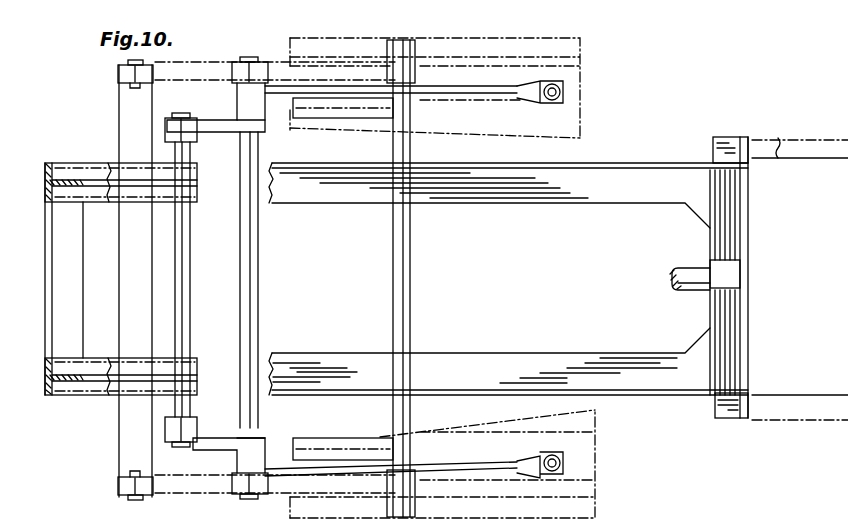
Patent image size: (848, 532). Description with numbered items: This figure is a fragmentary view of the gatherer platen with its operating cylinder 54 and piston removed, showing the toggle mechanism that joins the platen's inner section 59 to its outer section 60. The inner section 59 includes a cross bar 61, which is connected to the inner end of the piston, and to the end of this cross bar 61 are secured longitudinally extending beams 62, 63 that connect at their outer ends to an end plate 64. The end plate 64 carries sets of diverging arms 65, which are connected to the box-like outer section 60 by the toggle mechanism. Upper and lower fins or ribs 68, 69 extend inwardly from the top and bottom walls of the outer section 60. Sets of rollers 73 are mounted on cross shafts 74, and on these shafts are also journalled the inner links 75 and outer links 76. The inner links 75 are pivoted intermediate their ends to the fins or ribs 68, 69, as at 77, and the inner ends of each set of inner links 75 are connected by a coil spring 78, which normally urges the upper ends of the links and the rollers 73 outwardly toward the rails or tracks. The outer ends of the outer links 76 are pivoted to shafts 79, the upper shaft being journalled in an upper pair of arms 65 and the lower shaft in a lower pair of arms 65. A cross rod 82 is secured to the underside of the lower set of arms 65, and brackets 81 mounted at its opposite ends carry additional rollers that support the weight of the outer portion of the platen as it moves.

The cylinder 54 is at (690, 267).
The inner section 59 is at (476, 204).
The outer section 60 is at (533, 412).
The cross bar 61 is at (722, 318).
The beam 62 is at (103, 202).
The beam 63 is at (97, 358).
The end plate 64 is at (65, 250).
The diverging arms 65 is at (117, 172).
The upper fin or rib 68 is at (487, 118).
The lower fin or rib 69 is at (480, 437).
The rollers 73 is at (278, 52).
The cross shafts 74 is at (259, 299).
The inner links 75 is at (283, 93).
The outer links 76 is at (212, 126).
The pivot 77 is at (398, 58).
The coil spring 78 is at (565, 92).
The shafts 79 is at (183, 216).
The brackets 81 is at (118, 72).
The cross rod 82 is at (130, 457).